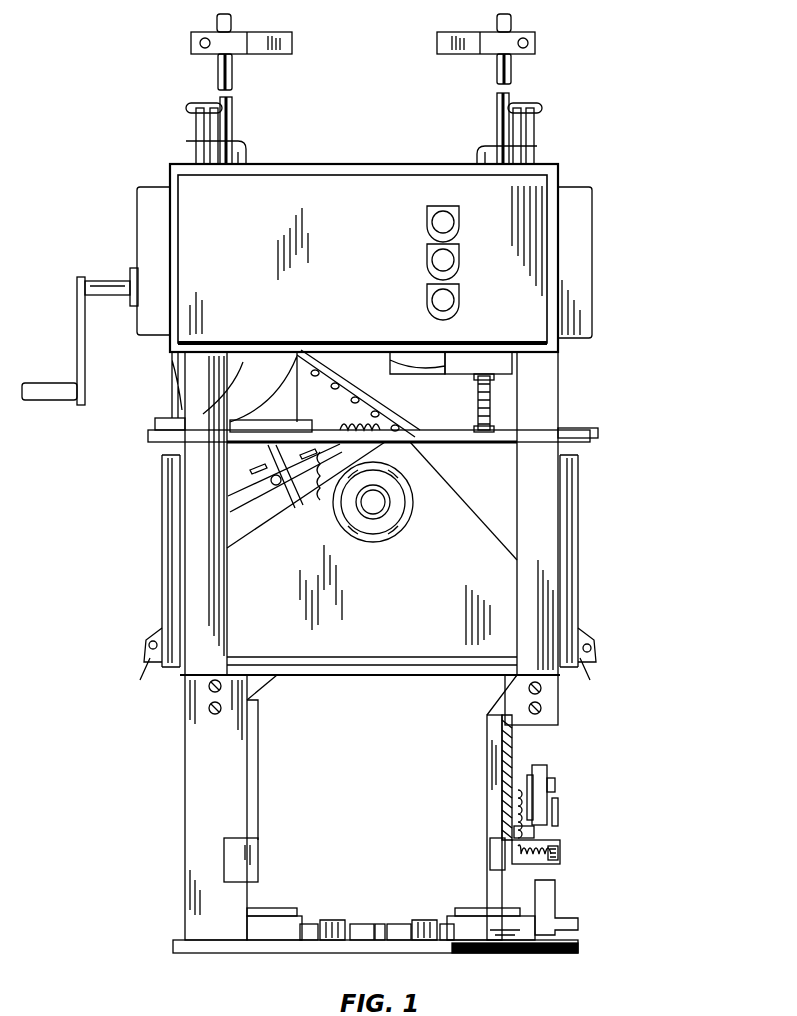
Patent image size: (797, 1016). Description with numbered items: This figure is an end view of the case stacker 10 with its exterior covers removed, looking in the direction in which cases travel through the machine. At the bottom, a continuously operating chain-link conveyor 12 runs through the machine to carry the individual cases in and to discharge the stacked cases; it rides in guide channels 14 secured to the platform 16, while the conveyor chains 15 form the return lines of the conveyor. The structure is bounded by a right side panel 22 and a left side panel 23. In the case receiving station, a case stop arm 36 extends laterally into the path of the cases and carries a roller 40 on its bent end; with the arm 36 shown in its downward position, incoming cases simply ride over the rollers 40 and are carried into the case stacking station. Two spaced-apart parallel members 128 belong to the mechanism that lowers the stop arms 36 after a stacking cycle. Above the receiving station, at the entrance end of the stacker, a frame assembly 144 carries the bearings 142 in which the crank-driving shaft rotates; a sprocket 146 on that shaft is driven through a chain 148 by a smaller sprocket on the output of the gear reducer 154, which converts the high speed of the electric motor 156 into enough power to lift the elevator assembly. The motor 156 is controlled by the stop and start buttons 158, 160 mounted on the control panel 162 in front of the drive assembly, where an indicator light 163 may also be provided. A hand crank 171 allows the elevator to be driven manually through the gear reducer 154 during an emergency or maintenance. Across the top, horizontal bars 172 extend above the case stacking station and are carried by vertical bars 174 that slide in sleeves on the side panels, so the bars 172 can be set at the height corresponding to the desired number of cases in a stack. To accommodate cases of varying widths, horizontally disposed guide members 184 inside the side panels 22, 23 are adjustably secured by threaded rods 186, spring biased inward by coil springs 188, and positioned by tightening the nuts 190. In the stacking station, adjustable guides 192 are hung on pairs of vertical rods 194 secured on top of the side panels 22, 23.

The case stacker 10 is at (588, 478).
The conveyor 12 is at (336, 918).
The guide channels 14 is at (314, 916).
The conveyor chains 15 is at (398, 935).
The platform 16 is at (578, 952).
The side panel 22 is at (482, 746).
The side panel 23 is at (258, 786).
The case stop arm 36 is at (273, 932).
The roller 40 is at (274, 906).
The spaced-apart parallel members 128 is at (572, 916).
The bearings 142 is at (394, 516).
The frame assembly 144 is at (579, 580).
The sprocket 146 is at (326, 468).
The chain 148 is at (348, 390).
The gear reducer 154 is at (166, 397).
The electric motor 156 is at (466, 388).
The stop button 158 is at (448, 270).
The start button 160 is at (450, 302).
The control panel 162 is at (348, 200).
The indicator light 163 is at (432, 222).
The crank 171 is at (77, 330).
The horizontal bars 172 is at (300, 27).
The vertical bars 174 is at (210, 74).
The guide members 184 is at (248, 862).
The threaded rods 186 is at (533, 846).
The coil springs 188 is at (553, 848).
The nuts 190 is at (557, 862).
The adjustable guides 192 is at (241, 164).
The vertical rods 194 is at (187, 138).